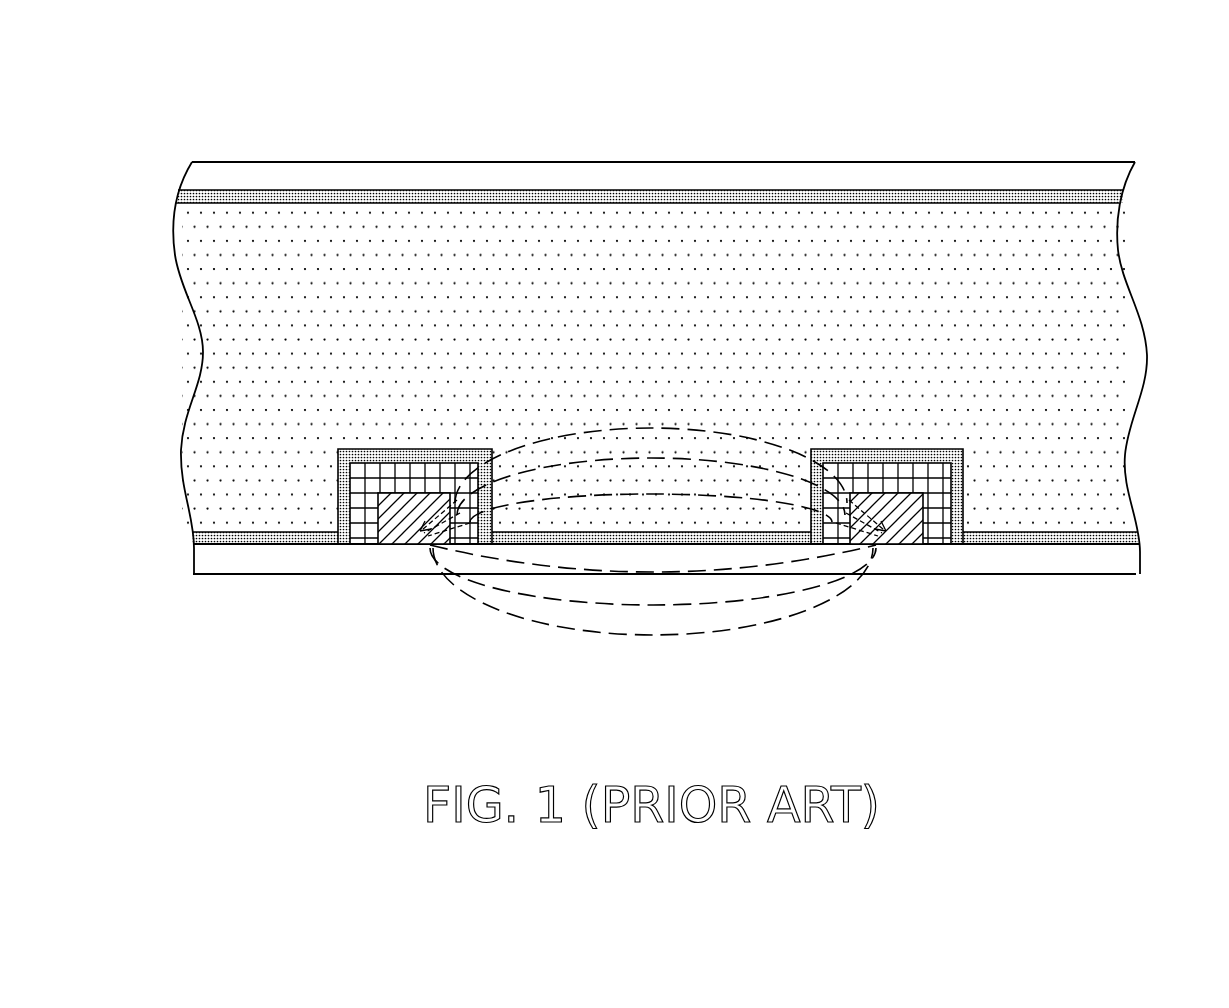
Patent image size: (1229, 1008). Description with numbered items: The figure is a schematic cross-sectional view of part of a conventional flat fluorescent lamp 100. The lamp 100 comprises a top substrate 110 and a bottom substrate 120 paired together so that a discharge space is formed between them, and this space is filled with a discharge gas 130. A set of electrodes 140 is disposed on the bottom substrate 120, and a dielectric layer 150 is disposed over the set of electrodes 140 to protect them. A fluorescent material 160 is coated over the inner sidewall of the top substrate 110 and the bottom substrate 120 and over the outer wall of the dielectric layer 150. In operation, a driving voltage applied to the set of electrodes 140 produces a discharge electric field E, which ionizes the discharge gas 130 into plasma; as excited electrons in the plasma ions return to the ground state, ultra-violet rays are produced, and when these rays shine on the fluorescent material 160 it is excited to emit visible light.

The flat fluorescent lamp 100 is at (1128, 645).
The top substrate 110 is at (308, 176).
The bottom substrate 120 is at (272, 563).
The discharge gas 130 is at (452, 225).
The set of electrodes 140 is at (393, 545).
The dielectric layer 150 is at (357, 484).
The fluorescent material 160 is at (522, 200).
The discharge electric field E is at (645, 606).